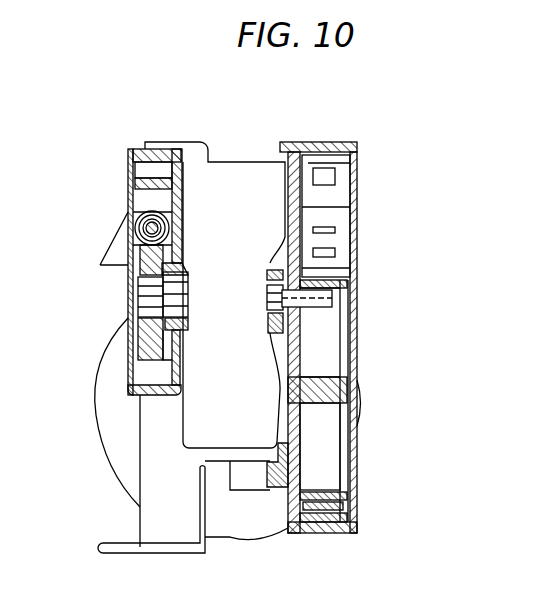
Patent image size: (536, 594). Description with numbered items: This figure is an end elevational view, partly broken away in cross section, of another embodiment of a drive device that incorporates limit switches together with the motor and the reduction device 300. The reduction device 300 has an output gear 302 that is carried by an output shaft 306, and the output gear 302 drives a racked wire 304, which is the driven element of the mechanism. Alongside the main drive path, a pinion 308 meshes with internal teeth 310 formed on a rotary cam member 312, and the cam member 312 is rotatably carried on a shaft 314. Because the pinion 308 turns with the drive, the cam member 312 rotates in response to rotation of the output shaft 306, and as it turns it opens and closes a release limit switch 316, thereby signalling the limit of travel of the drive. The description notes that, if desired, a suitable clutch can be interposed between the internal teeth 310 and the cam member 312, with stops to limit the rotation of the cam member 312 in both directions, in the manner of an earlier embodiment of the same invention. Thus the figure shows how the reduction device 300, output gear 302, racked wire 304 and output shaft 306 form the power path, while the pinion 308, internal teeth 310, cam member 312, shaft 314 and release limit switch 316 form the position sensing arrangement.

The reduction device 300 is at (180, 428).
The output gear 302 is at (143, 333).
The racked wire 304 is at (157, 240).
The output shaft 306 is at (145, 302).
The pinion 308 is at (322, 308).
The internal teeth 310 is at (340, 350).
The rotary cam member 312 is at (333, 480).
The shaft 314 is at (340, 388).
The release limit switch 316 is at (342, 193).